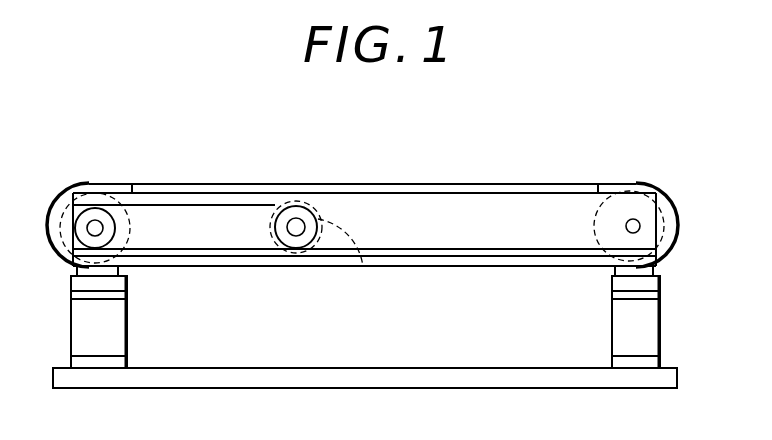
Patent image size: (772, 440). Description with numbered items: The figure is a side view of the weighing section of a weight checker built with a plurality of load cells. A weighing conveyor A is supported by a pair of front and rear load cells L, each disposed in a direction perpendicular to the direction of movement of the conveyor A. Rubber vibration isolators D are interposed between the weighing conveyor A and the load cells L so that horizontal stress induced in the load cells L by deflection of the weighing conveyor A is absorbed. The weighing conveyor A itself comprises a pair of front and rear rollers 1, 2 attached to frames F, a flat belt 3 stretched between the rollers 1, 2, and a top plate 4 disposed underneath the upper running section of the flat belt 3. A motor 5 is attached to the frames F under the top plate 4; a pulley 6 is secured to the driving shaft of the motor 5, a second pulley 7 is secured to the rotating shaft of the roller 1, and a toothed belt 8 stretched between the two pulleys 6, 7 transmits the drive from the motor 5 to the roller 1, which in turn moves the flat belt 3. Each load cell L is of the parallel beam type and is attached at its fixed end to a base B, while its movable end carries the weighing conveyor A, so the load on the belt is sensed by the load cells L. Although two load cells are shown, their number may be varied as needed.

The roller 1 is at (56, 206).
The roller 2 is at (677, 217).
The flat belt 3 is at (245, 184).
The top plate 4 is at (365, 191).
The motor 5 is at (363, 267).
The pulley 6 is at (296, 248).
The pulley 7 is at (97, 208).
The toothed belt 8 is at (182, 249).
The weighing conveyor A is at (465, 182).
The frames F is at (542, 203).
The rubber vibration isolators D is at (76, 274).
The load cells L is at (83, 335).
The base B is at (403, 377).